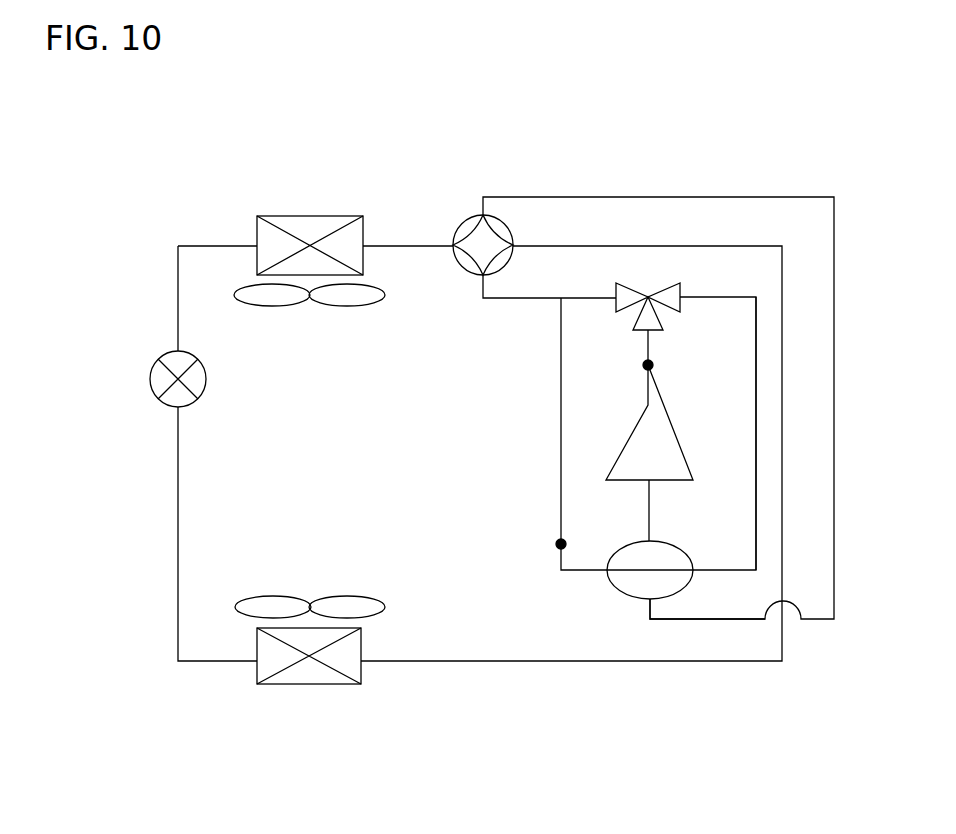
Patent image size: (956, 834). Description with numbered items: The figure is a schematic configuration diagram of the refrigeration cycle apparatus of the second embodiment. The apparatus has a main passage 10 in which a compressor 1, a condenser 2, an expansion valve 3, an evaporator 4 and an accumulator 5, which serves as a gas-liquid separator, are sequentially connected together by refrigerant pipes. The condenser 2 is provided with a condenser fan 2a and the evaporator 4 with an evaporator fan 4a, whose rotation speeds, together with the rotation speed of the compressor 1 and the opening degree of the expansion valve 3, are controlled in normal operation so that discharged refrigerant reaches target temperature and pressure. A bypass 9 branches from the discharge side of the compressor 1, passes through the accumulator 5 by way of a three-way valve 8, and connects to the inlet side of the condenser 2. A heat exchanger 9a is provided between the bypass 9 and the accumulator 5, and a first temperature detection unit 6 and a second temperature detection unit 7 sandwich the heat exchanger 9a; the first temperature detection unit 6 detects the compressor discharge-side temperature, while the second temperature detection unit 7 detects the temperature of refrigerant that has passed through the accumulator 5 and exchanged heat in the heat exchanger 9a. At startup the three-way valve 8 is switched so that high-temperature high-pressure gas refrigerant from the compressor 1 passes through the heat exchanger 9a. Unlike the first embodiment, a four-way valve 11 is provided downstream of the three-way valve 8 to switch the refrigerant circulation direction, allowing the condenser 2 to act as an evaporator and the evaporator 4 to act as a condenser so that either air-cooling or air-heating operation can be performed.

The compressor 1 is at (619, 452).
The condenser 2 is at (287, 216).
The condenser fan 2a is at (272, 306).
The expansion valve 3 is at (152, 362).
The evaporator 4 is at (326, 686).
The evaporator fan 4a is at (272, 597).
The accumulator 5 is at (617, 592).
The first temperature detection unit 6 is at (645, 366).
The second temperature detection unit 7 is at (558, 542).
The three-way valve 8 is at (640, 300).
The bypass 9 is at (756, 350).
The heat exchanger 9a is at (673, 572).
The main passage 10 is at (598, 244).
The four-way valve 11 is at (478, 218).